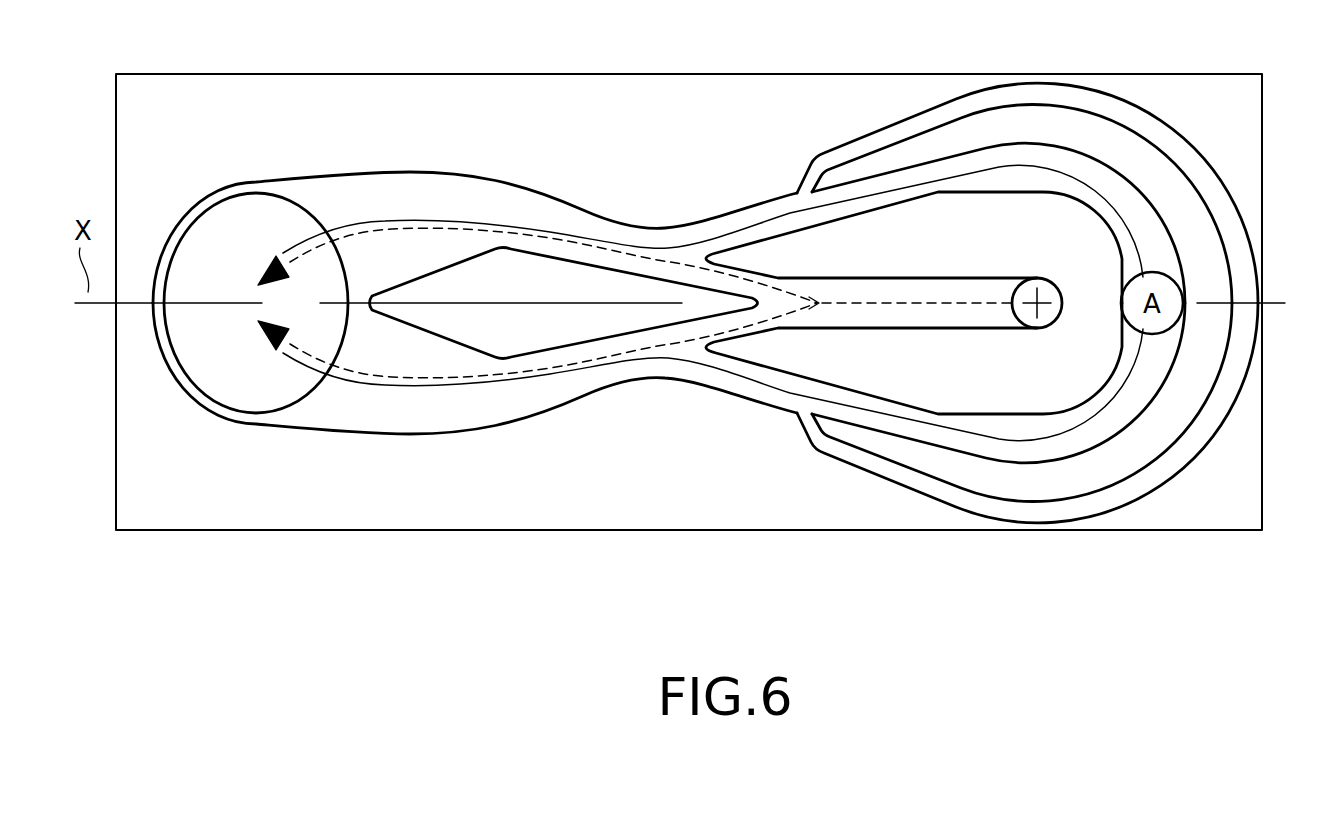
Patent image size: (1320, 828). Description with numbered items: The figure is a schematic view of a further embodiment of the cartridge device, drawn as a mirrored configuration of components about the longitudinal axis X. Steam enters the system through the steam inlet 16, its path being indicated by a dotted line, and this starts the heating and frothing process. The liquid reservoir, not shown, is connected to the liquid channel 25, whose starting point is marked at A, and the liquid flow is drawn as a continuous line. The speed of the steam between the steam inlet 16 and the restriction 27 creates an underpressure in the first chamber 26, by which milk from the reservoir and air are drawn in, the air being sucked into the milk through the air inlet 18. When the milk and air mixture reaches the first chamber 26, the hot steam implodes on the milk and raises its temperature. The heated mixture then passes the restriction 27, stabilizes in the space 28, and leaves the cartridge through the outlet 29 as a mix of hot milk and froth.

The steam inlet 16 is at (1043, 316).
The air inlet 18 is at (1246, 305).
The liquid channel 25 is at (1132, 303).
The first chamber 26 is at (678, 250).
The restriction 27 is at (638, 223).
The space 28 is at (412, 225).
The outlet 29 is at (238, 323).